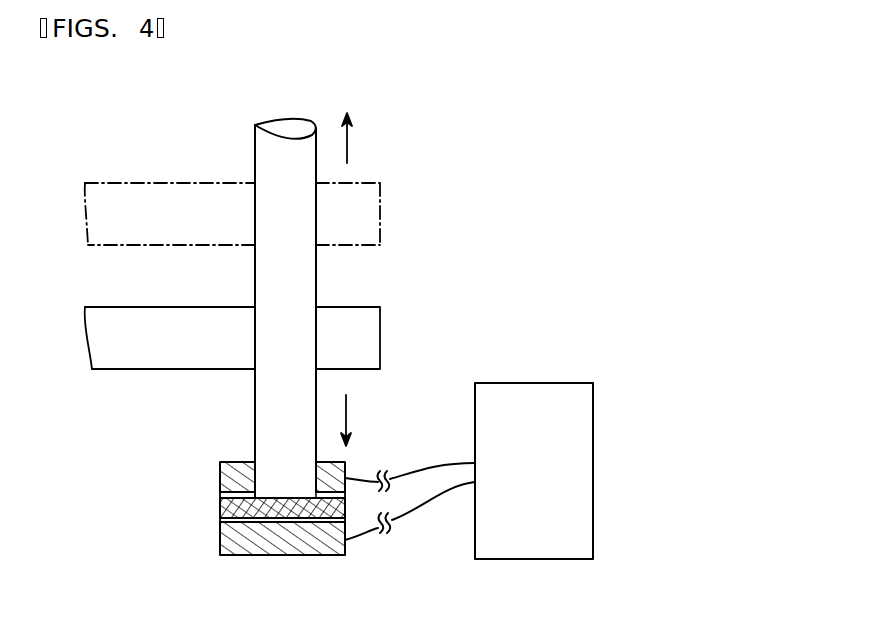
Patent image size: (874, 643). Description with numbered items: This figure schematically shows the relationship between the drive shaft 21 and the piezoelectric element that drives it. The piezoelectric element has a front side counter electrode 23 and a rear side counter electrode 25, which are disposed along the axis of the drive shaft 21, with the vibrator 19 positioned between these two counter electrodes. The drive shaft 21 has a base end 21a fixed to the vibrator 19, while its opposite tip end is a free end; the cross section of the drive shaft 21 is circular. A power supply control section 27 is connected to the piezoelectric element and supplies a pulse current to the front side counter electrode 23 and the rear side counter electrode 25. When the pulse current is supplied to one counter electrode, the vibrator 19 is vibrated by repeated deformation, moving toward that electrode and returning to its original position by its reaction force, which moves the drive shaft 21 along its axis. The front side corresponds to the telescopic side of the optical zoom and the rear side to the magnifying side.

The drive shaft 21 is at (303, 283).
The base end 21a is at (282, 497).
The front side counter electrode 23 is at (220, 481).
The vibrator 19 is at (220, 512).
The rear side counter electrode 25 is at (220, 547).
The power supply control section 27 is at (586, 382).